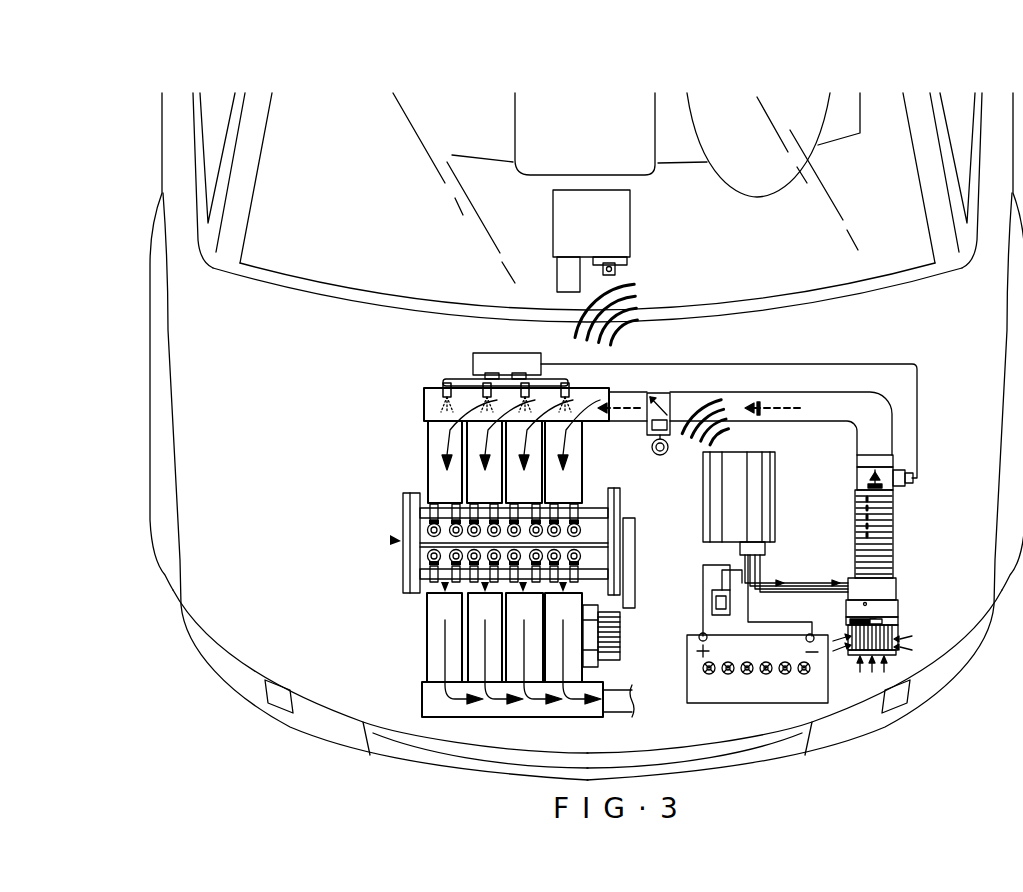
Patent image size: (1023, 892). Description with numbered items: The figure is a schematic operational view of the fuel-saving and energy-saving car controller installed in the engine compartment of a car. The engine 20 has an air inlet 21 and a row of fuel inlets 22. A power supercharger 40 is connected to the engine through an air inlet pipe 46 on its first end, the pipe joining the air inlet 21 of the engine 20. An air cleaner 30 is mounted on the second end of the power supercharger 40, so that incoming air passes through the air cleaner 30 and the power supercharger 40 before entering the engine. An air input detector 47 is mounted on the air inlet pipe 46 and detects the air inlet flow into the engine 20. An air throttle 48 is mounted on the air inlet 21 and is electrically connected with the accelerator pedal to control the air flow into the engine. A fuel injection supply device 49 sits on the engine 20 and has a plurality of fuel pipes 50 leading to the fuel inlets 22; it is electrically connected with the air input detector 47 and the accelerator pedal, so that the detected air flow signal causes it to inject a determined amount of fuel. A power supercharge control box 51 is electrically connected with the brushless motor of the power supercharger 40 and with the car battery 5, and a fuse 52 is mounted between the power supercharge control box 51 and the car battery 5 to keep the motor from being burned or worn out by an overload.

The car battery 5 is at (703, 703).
The engine 20 is at (392, 540).
The air inlet 21 is at (848, 407).
The fuel inlets 22 is at (445, 390).
The air cleaner 30 is at (898, 652).
The power supercharger 40 is at (897, 596).
The air inlet pipe 46 is at (894, 543).
The air input detector 47 is at (906, 481).
The air throttle 48 is at (661, 458).
The fuel injection supply device 49 is at (492, 364).
The fuel pipes 50 is at (447, 380).
The power supercharge control box 51 is at (766, 485).
The fuse 52 is at (712, 600).